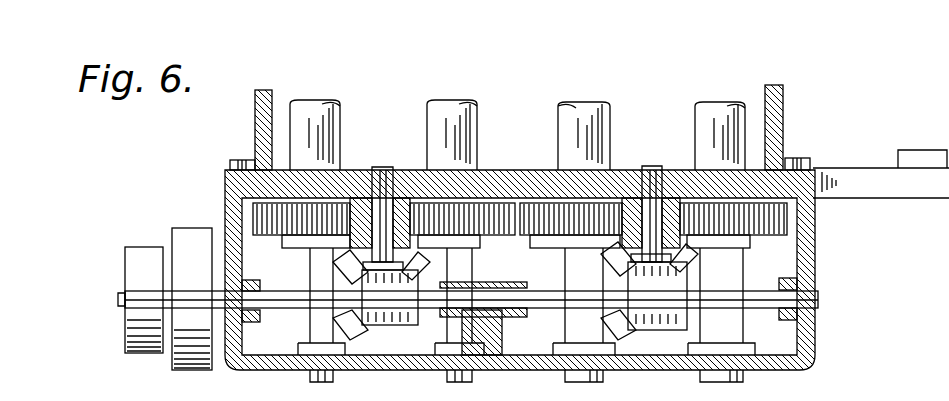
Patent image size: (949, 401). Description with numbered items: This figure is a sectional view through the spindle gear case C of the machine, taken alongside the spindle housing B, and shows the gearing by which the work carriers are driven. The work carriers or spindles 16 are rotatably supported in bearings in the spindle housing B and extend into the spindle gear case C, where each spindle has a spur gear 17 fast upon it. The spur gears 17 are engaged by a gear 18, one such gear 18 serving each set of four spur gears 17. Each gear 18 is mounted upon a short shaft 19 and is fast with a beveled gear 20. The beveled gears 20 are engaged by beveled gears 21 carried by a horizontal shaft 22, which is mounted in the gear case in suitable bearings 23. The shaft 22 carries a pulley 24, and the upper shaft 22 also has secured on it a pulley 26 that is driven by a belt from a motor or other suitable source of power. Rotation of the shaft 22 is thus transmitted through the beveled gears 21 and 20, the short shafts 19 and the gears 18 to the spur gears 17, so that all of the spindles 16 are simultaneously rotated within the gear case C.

The work carriers or spindles 16 is at (345, 115).
The spur gears 17 is at (508, 228).
The gear 18 is at (400, 210).
The short shafts 19 is at (383, 167).
The beveled gears 20 is at (405, 270).
The beveled gears 21 is at (352, 330).
The shafts 22 is at (277, 298).
The bearings 23 is at (258, 322).
The pulleys 24 is at (125, 271).
The pulley 26 is at (182, 228).
The spindle housing B is at (783, 118).
The spindle gear case C is at (815, 340).